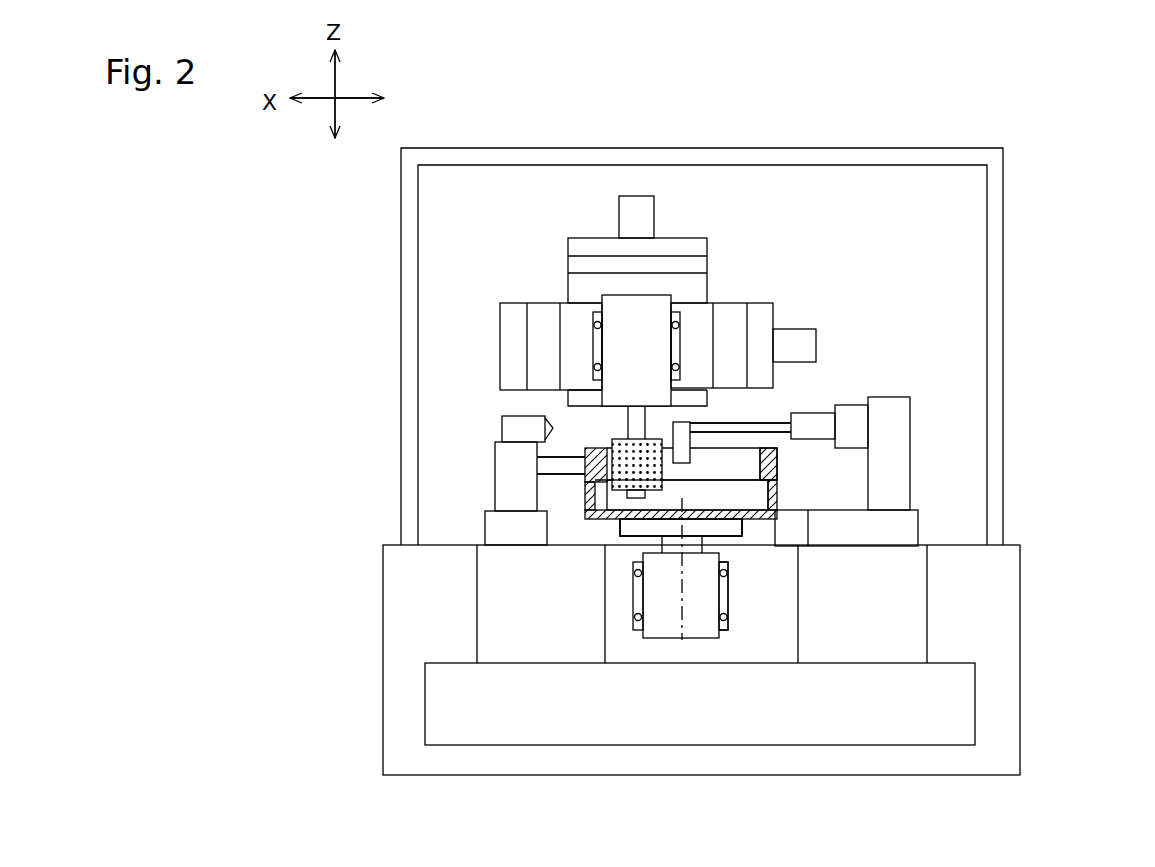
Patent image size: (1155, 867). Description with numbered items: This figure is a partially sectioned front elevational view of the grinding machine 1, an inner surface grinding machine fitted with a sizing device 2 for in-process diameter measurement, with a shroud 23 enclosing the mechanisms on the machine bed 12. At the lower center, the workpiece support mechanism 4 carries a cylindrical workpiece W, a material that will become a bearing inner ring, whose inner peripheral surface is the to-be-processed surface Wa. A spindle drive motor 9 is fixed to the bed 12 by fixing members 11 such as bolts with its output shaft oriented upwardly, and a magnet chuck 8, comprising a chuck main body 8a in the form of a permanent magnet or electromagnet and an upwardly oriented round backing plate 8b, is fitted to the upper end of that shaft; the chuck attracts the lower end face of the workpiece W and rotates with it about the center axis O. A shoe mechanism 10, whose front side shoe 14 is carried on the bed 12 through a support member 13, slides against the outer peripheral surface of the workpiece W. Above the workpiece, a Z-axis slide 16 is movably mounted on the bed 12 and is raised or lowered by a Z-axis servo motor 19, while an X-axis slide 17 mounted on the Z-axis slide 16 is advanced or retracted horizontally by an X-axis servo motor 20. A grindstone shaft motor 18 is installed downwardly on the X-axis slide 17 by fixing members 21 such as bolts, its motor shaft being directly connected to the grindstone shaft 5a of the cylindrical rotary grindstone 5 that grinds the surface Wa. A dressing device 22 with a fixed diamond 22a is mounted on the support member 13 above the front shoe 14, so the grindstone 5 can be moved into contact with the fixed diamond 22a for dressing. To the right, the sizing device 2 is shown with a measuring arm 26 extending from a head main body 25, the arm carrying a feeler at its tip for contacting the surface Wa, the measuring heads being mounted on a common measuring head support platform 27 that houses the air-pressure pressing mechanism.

The grinding machine 1 is at (935, 130).
The sizing device 2 is at (742, 422).
The workpiece support mechanism 4 is at (613, 528).
The grindstone 5 is at (613, 469).
The grindstone shaft 5a is at (637, 425).
The magnet chuck 8 is at (727, 538).
The chuck main body 8a is at (705, 545).
The backing plate 8b is at (740, 531).
The spindle drive motor 9 is at (663, 612).
The shoe mechanism 10 is at (558, 453).
The fixing members 11 is at (737, 583).
The machine bed 12 is at (930, 690).
The support member 13 is at (513, 498).
The front side shoe 14 is at (557, 466).
The Z-axis slide 16 is at (686, 240).
The X-axis slide 17 is at (775, 318).
The grindstone shaft motor 18 is at (625, 340).
The Z-axis servo motor 19 is at (636, 193).
The X-axis servo motor 20 is at (818, 347).
The fixing members 21 is at (680, 325).
The dressing device 22 is at (490, 428).
The fixed diamond 22a is at (551, 426).
The shroud 23 is at (1007, 222).
The head main body 25 is at (813, 420).
The measuring arm 26 is at (765, 412).
The measuring head support platform 27 is at (843, 428).
The workpiece W is at (778, 493).
The to-be-processed surface Wa is at (778, 467).
The center axis O is at (680, 595).